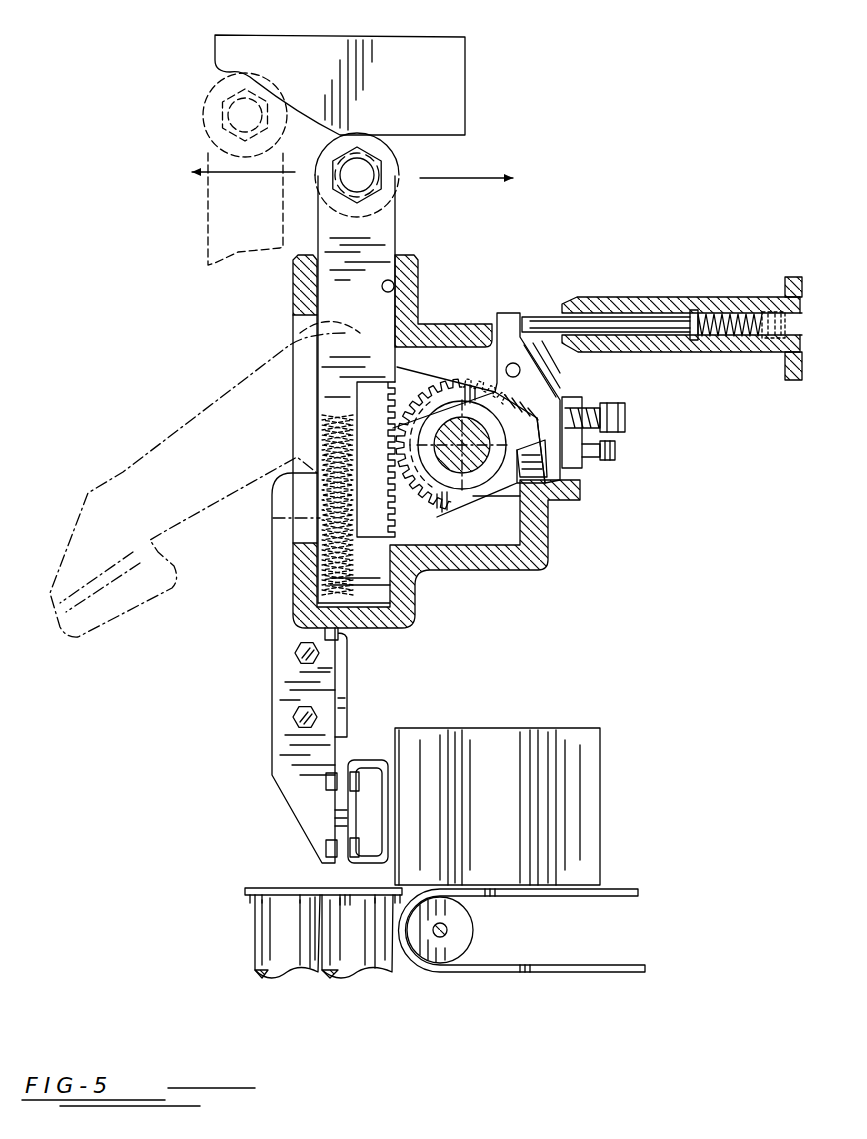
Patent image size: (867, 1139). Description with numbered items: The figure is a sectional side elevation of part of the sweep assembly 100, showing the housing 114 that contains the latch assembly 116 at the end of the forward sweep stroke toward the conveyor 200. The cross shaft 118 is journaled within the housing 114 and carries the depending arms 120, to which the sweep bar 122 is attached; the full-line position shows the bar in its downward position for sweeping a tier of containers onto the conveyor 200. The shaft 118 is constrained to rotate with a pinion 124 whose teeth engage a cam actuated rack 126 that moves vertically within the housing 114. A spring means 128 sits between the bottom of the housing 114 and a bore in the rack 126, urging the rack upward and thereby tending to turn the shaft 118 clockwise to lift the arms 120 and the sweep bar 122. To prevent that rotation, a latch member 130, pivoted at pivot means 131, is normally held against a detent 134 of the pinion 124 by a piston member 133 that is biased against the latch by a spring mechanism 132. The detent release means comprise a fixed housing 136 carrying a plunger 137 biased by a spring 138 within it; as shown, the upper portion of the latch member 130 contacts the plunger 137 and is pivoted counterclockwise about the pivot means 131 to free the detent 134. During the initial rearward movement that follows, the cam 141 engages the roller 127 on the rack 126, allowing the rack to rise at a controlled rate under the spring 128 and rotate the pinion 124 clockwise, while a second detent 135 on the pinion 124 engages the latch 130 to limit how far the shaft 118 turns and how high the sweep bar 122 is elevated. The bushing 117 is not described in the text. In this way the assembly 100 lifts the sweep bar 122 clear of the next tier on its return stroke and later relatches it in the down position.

The sweep assembly 100 is at (563, 184).
The housing 114 is at (604, 526).
The latch assembly 116 is at (523, 558).
The bushing 117 is at (382, 291).
The cross shaft 118 is at (463, 467).
The depending arm 120 is at (272, 707).
The sweep bar 122 is at (368, 758).
The pinion 124 is at (434, 494).
The cam actuated rack 126 is at (383, 250).
The roller 127 is at (400, 167).
The spring means 128 is at (322, 527).
The latch member 130 is at (580, 481).
The pivot means 131 is at (521, 368).
The spring mechanism 132 is at (626, 421).
The piston member 133 is at (580, 398).
The detent 134 is at (612, 450).
The second detent 135 is at (533, 407).
The fixed housing 136 is at (637, 296).
The plunger 137 is at (668, 325).
The spring 138 is at (732, 322).
The cam 141 is at (455, 68).
The conveyor 200 is at (516, 996).